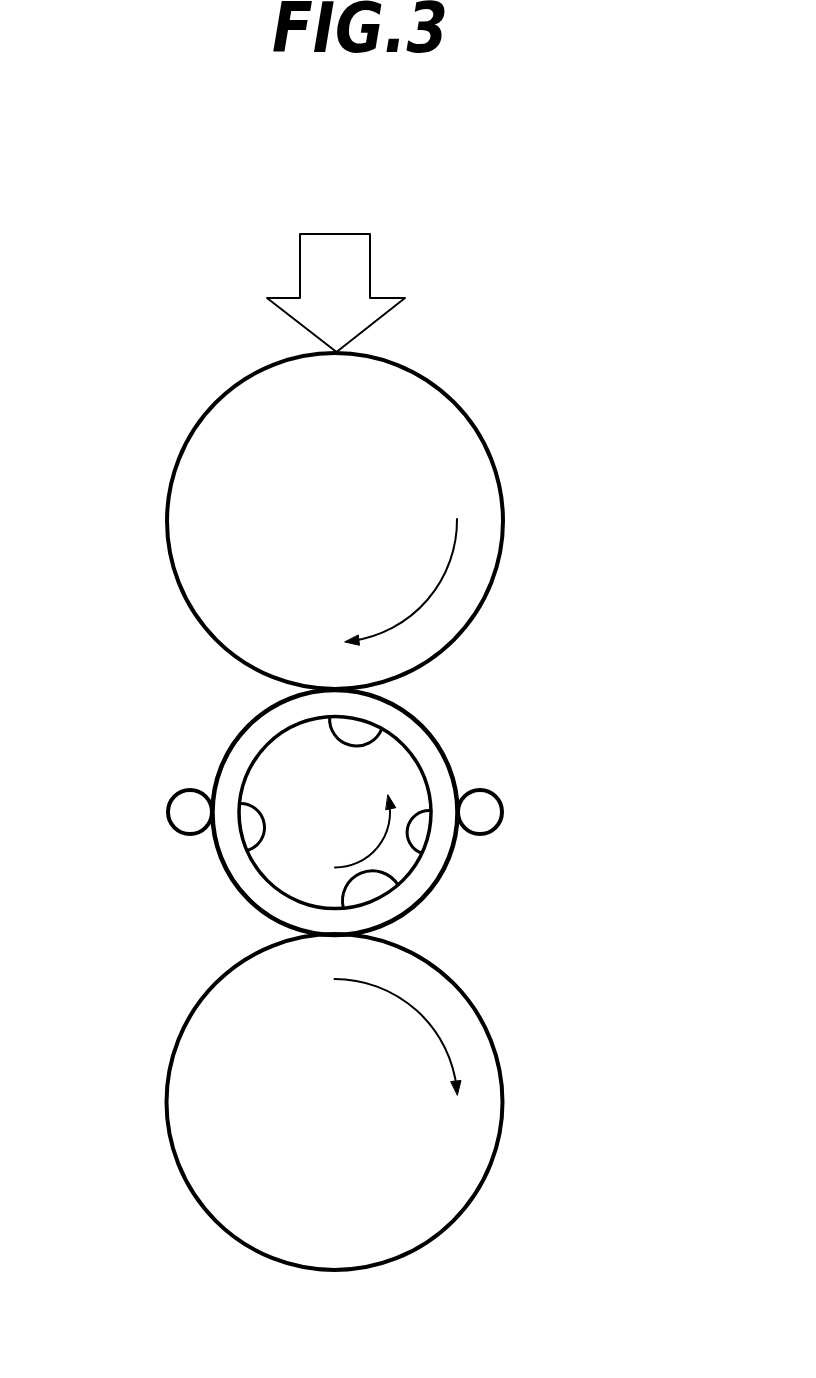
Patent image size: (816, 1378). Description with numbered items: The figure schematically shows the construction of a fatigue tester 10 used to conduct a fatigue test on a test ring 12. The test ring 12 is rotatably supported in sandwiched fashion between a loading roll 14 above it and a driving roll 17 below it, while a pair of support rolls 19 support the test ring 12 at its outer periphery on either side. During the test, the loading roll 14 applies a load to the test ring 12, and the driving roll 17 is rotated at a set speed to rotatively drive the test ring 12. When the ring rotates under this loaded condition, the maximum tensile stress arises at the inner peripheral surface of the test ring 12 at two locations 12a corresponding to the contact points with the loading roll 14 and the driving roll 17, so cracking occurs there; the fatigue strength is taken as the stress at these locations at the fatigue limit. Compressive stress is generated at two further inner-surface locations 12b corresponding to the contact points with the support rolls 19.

The fatigue tester 10 is at (536, 356).
The test ring 12 is at (448, 762).
The locations of maximum tensile stress 12a is at (377, 737).
The locations of compressive stress 12b is at (250, 855).
The loading roll 14 is at (503, 507).
The driving roll 17 is at (497, 1047).
The support rolls 19 is at (503, 805).